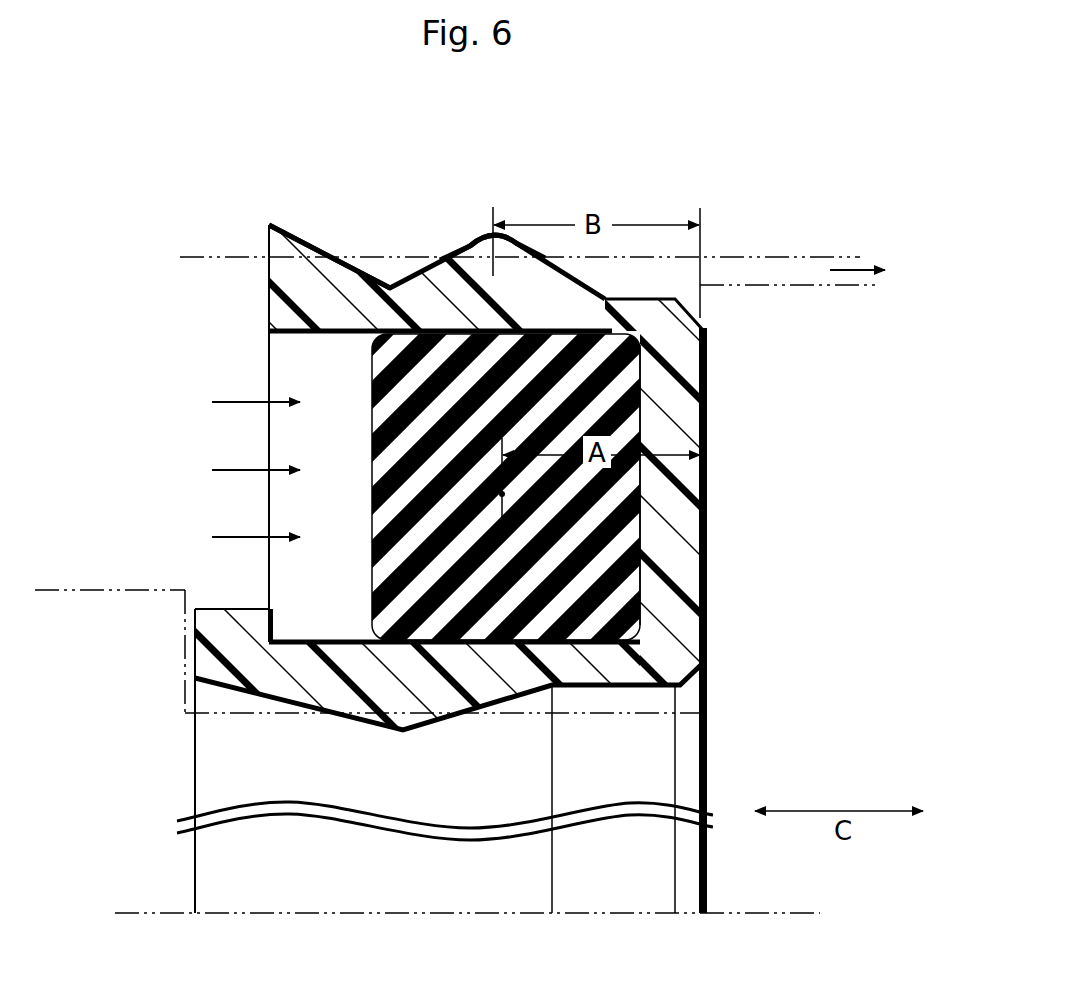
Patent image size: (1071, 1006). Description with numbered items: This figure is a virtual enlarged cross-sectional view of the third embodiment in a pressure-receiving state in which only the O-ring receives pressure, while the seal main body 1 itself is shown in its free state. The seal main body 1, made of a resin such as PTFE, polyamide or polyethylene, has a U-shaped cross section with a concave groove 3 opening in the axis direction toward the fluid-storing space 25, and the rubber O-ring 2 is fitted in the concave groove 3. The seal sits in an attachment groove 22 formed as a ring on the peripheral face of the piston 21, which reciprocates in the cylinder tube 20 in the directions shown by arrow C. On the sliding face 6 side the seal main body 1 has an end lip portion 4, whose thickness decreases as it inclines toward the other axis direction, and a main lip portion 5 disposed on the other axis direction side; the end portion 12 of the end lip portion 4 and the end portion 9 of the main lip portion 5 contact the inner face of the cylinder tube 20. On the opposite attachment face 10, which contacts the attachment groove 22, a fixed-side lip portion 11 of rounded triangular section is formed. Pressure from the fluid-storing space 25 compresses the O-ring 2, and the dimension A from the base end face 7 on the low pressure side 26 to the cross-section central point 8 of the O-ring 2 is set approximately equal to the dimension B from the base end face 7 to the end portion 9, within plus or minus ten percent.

The seal main body 1 is at (708, 355).
The O-ring 2 is at (620, 539).
The concave groove 3 is at (298, 336).
The end lip portion 4 is at (315, 244).
The main lip portion 5 is at (457, 245).
The sliding face 6 is at (530, 172).
The base end face 7 is at (707, 478).
The cross-section central point 8 is at (502, 496).
The end portion 9 is at (493, 233).
The attachment face 10 is at (342, 772).
The fixed-side lip portion 11 is at (343, 723).
The end portion 12 is at (269, 225).
The cylinder tube 20 is at (778, 261).
The piston 21 is at (142, 585).
The attachment groove 22 is at (626, 712).
The fluid-storing space 25 is at (131, 435).
The low pressure side 26 is at (897, 284).